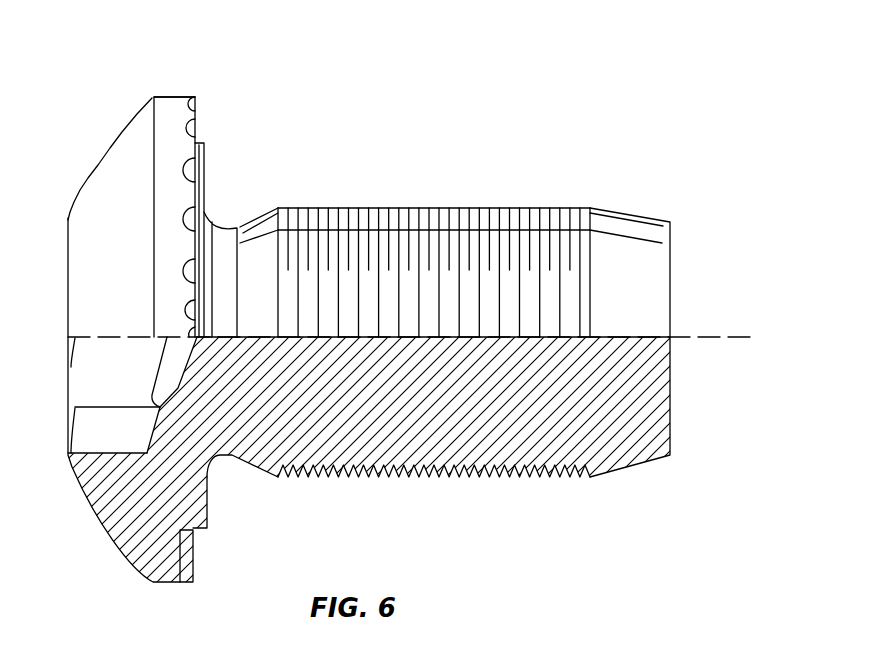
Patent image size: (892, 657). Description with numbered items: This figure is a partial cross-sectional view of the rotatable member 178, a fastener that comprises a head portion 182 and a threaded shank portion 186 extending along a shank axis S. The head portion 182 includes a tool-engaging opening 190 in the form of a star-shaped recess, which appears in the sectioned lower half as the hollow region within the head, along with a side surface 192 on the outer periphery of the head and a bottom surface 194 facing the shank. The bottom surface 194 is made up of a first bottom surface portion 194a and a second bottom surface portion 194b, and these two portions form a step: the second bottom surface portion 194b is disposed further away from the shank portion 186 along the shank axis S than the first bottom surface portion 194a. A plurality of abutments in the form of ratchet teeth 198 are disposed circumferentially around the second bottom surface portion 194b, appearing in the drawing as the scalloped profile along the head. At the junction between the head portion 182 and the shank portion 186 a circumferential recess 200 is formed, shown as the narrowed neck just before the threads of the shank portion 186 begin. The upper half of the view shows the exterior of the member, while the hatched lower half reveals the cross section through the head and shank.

The rotatable member 178 is at (78, 127).
The head portion 182 is at (82, 183).
The threaded shank portion 186 is at (482, 208).
The tool-engaging opening 190 is at (92, 391).
The side surface 192 is at (165, 97).
The bottom surface 194 is at (208, 121).
The first bottom surface portion 194a is at (207, 508).
The second bottom surface portion 194b is at (193, 556).
The ratchet teeth 198 is at (190, 97).
The circumferential recess 200 is at (231, 214).
The shank axis S is at (688, 337).